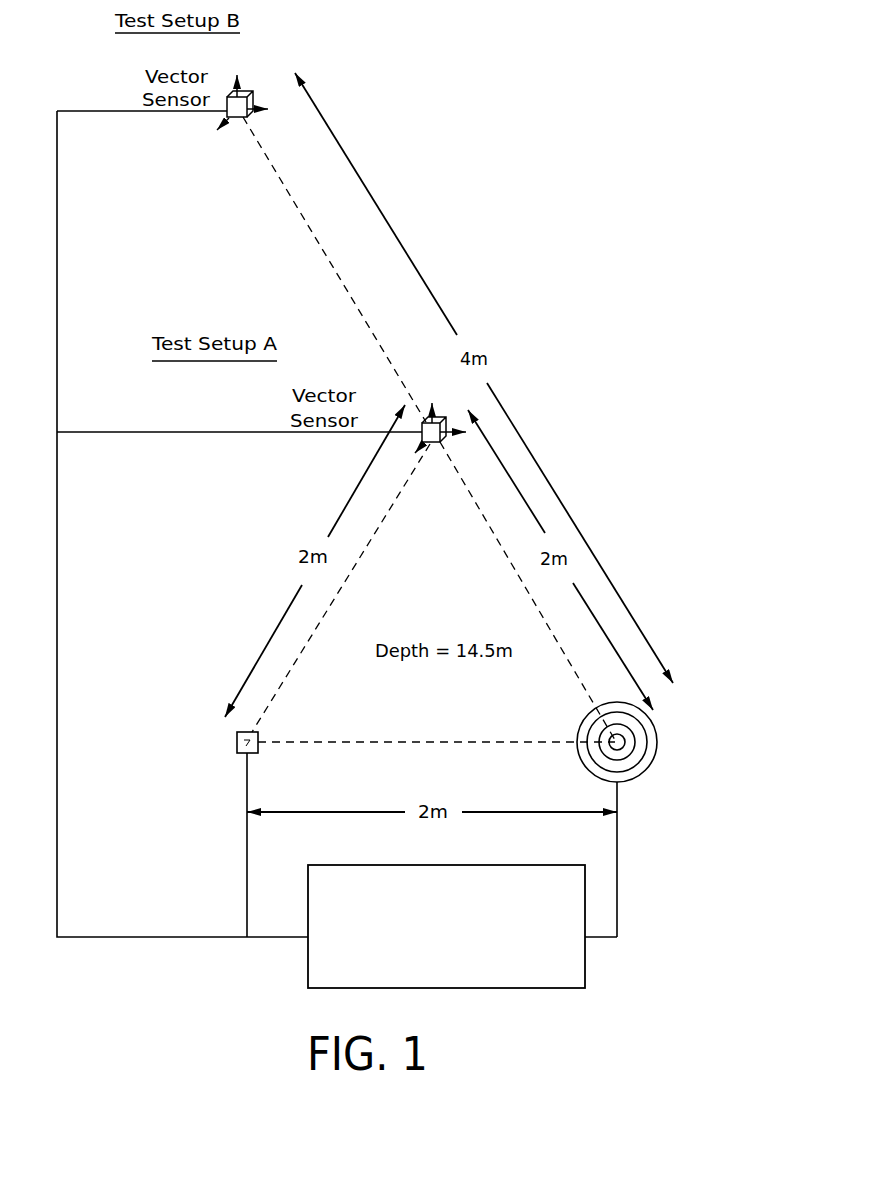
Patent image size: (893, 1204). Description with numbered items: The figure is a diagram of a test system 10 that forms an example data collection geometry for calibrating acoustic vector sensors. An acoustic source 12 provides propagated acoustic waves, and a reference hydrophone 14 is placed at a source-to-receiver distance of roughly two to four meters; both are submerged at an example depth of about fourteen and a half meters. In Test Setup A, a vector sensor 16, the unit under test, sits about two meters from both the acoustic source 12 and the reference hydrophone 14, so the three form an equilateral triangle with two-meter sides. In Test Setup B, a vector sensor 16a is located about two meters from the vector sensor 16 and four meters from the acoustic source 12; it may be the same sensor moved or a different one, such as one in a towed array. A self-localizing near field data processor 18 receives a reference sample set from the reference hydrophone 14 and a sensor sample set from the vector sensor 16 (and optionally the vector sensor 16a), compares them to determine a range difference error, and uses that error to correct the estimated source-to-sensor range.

The test system 10 is at (487, 165).
The acoustic source 12 is at (685, 720).
The reference hydrophone 14 is at (200, 718).
The vector sensor 16 is at (437, 457).
The vector sensor 16a is at (215, 142).
The self-localizing near field data processor 18 is at (508, 962).